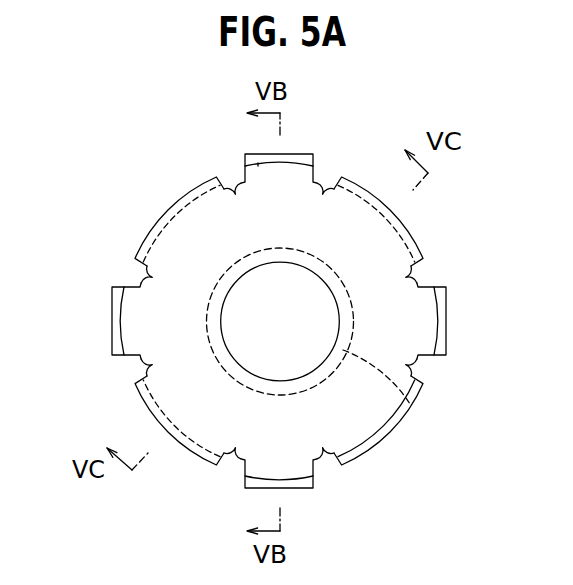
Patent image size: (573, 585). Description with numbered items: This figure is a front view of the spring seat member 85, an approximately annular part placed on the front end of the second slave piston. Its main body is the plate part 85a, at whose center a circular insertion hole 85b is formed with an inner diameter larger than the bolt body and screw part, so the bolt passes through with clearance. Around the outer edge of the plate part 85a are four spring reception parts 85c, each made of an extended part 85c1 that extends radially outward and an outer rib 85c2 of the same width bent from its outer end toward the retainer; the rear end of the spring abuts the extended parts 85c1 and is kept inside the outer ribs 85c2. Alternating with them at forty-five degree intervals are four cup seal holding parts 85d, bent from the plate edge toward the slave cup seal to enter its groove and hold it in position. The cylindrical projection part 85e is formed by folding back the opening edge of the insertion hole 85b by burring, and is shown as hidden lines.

The spring seat member 85 is at (112, 183).
The plate part 85a is at (213, 423).
The insertion hole 85b is at (302, 372).
The spring reception part 85c is at (302, 152).
The extended part 85c1 is at (328, 193).
The outer rib 85c2 is at (258, 163).
The cup seal holding part 85d is at (412, 228).
The projection part 85e is at (413, 405).